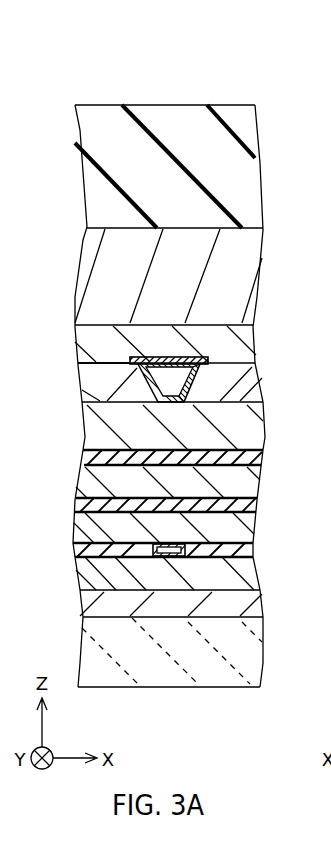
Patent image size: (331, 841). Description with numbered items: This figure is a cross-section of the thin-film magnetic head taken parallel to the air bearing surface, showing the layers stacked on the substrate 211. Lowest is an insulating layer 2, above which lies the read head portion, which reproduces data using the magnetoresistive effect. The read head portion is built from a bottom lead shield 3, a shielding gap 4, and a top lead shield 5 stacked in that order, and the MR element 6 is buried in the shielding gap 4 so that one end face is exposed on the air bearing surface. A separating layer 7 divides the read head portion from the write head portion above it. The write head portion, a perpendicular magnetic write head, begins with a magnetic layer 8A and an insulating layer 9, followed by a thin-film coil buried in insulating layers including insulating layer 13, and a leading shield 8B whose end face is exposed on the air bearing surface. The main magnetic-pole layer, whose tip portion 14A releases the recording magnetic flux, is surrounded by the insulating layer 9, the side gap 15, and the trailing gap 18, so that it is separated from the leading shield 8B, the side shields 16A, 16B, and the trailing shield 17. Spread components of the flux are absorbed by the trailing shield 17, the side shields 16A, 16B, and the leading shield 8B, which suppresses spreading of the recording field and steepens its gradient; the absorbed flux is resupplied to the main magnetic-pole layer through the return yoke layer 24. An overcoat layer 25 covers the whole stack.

The insulating layer 2 is at (233, 607).
The bottom lead shield 3 is at (207, 577).
The shielding gap 4 is at (150, 547).
The top lead shield 5 is at (130, 528).
The MR element 6 is at (165, 557).
The separating layer 7 is at (108, 510).
The magnetic layer 8A is at (88, 485).
The leading shield 8B is at (94, 435).
The insulating layer 9 is at (82, 458).
The insulating layer 13 is at (156, 401).
The tip portion 14A is at (80, 364).
The side gap 15 is at (200, 370).
The side shield 16A is at (78, 388).
The side shield 16B is at (256, 401).
The trailing shield 17 is at (223, 335).
The trailing gap 18 is at (134, 358).
The return yoke layer 24 is at (111, 248).
The overcoat layer 25 is at (165, 113).
The substrate 211 is at (255, 665).